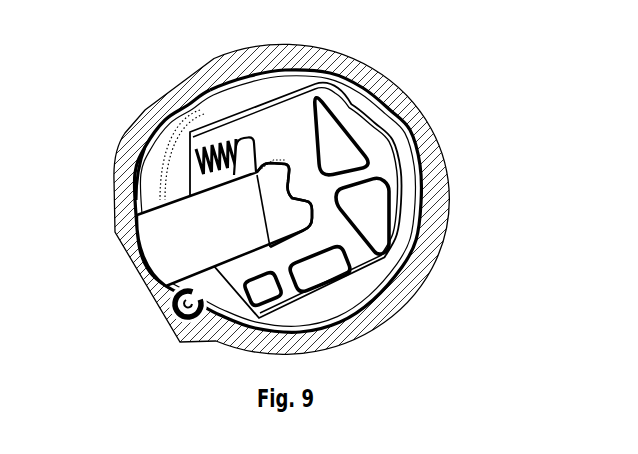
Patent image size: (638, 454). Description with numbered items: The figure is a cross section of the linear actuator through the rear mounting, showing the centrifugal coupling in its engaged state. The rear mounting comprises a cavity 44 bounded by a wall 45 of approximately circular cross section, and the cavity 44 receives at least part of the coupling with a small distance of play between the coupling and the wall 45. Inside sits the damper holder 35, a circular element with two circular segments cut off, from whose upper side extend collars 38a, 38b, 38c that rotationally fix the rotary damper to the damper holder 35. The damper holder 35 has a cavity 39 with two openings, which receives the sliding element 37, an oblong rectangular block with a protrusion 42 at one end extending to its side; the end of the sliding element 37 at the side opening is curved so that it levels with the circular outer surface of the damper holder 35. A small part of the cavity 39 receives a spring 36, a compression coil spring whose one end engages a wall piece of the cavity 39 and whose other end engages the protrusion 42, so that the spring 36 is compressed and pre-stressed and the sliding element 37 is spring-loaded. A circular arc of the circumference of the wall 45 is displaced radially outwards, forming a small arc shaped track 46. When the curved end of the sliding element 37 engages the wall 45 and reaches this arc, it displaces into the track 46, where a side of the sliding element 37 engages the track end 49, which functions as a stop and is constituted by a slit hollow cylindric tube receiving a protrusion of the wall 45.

The damper holder 35 is at (369, 266).
The spring 36 is at (219, 156).
The sliding element 37 is at (155, 233).
The collar 38a is at (383, 116).
The collar 38b is at (230, 293).
The collar 38c is at (182, 170).
The cavity 39 is at (273, 217).
The protrusion 42 is at (252, 150).
The cavity 44 is at (325, 310).
The wall 45 is at (357, 312).
The arc shaped track 46 is at (145, 196).
The track end 49 is at (168, 289).